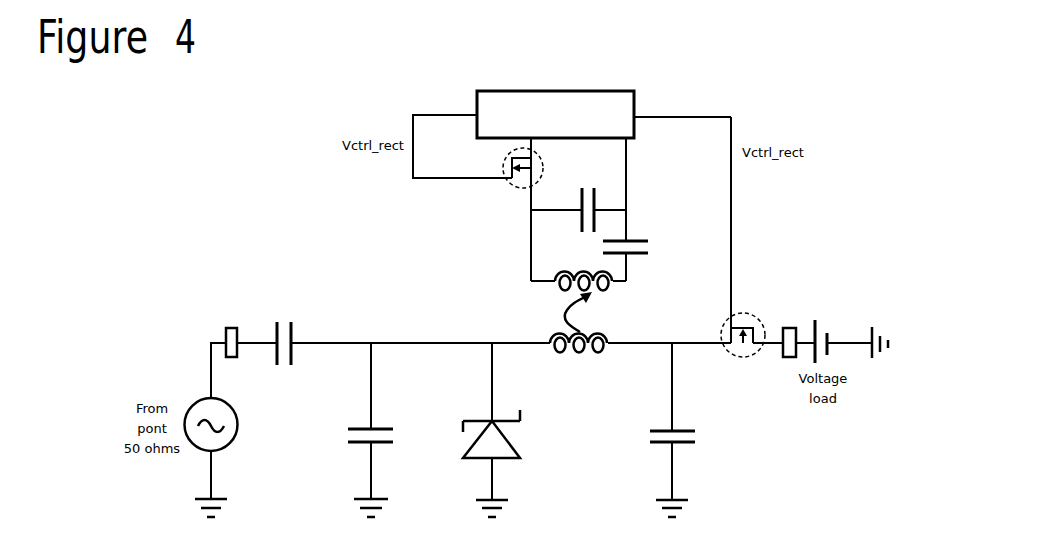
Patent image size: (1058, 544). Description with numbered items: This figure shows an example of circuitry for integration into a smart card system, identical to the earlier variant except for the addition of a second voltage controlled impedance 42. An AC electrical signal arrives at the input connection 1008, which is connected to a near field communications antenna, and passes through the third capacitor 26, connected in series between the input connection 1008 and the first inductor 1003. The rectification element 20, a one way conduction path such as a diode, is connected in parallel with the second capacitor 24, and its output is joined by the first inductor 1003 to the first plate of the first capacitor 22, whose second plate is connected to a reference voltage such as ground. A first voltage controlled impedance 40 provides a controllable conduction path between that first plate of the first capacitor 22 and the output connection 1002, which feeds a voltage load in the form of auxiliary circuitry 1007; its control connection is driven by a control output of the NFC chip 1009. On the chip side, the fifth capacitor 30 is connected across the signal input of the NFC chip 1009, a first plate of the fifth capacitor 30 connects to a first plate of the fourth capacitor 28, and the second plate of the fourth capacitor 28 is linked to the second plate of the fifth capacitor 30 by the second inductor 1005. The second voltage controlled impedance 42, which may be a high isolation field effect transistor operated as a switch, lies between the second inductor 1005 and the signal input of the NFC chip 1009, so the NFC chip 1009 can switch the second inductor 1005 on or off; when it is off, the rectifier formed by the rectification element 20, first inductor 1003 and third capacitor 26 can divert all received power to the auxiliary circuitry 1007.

The NFC chip 1009 is at (635, 105).
The second voltage controlled impedance 42 is at (516, 184).
The fifth capacitor 30 is at (595, 198).
The fourth capacitor 28 is at (633, 240).
The second inductor 1005 is at (602, 285).
The first inductor 1003 is at (583, 348).
The first voltage controlled impedance 40 is at (735, 357).
The output connection 1002 is at (791, 328).
The auxiliary circuitry 1007 is at (818, 328).
The input connection 1008 is at (232, 328).
The third capacitor 26 is at (293, 327).
The second capacitor 24 is at (388, 429).
The rectification element 20 is at (509, 441).
The first capacitor 22 is at (695, 442).